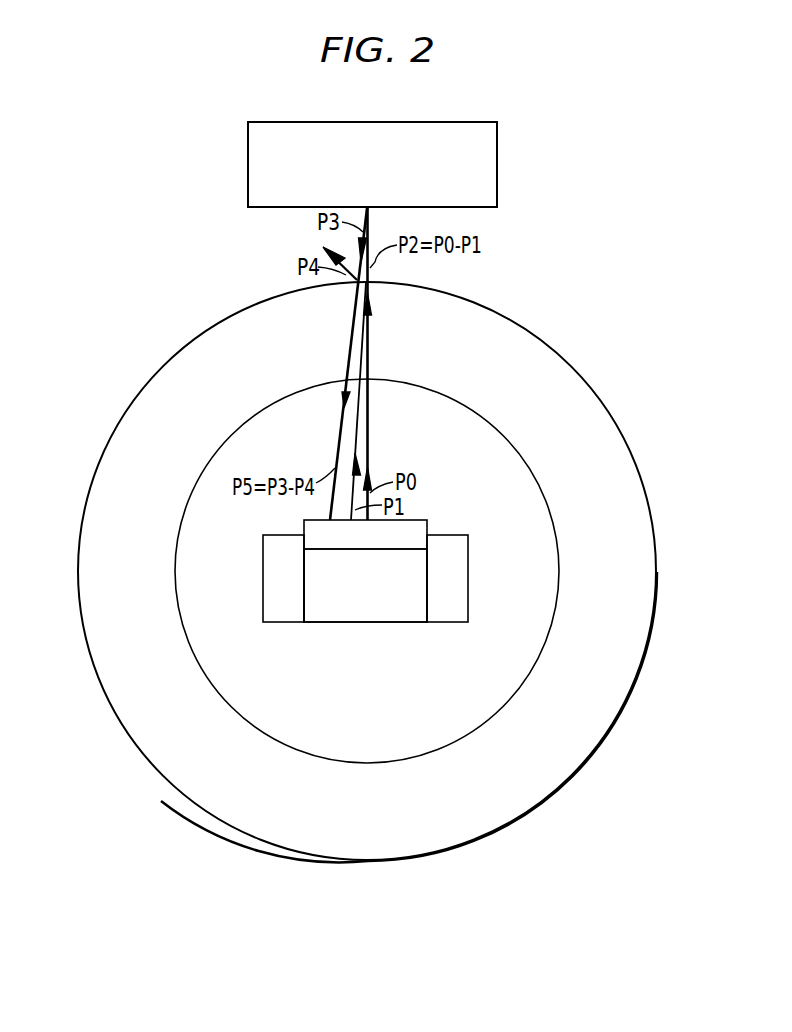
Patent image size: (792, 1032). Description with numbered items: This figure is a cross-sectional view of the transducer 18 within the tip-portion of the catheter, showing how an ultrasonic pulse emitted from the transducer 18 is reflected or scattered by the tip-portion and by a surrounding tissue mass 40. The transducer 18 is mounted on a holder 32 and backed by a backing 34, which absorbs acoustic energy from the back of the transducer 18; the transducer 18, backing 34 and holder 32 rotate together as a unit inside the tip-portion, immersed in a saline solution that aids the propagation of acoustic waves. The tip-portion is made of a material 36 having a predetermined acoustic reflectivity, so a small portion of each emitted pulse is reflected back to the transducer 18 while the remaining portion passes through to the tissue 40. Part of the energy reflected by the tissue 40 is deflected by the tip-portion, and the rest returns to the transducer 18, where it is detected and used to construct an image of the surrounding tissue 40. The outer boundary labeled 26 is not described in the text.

The tissue mass 40 is at (497, 165).
The transparent cover 26 is at (658, 572).
The material 36 is at (383, 815).
The transducer 18 is at (423, 518).
The backing 34 is at (363, 623).
The holder 32 is at (469, 575).